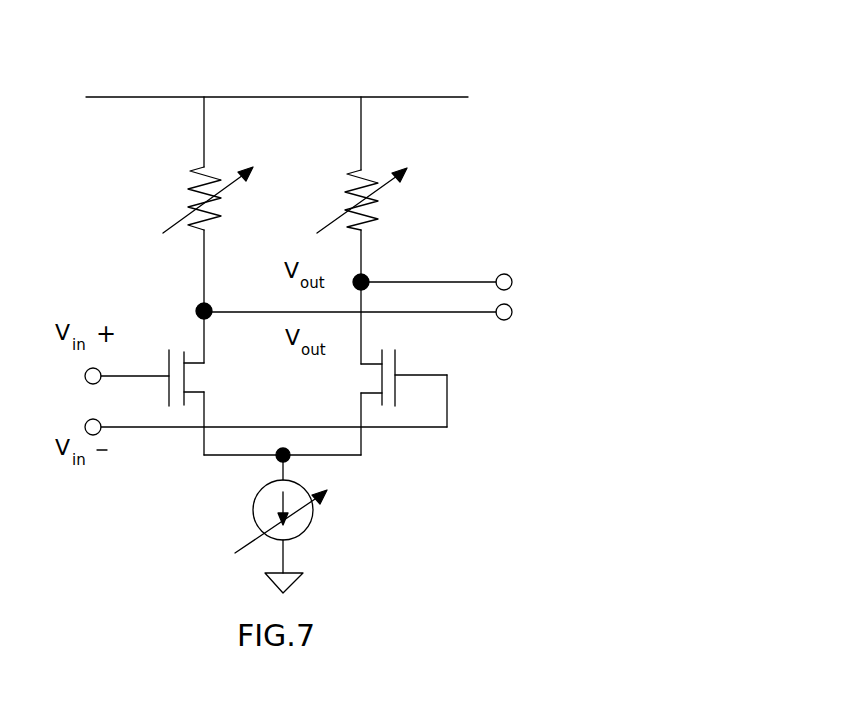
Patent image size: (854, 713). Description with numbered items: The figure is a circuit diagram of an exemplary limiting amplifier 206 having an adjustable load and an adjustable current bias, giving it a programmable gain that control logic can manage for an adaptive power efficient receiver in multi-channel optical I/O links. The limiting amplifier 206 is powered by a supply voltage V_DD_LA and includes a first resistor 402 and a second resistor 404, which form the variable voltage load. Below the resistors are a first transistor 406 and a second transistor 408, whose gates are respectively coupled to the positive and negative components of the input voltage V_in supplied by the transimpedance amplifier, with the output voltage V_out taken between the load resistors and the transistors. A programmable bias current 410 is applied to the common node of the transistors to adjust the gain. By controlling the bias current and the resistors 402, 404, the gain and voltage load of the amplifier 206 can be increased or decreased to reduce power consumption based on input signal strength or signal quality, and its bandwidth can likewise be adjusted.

The limiting amplifier 206 is at (323, 31).
The first resistor 402 is at (188, 183).
The second resistor 404 is at (365, 170).
The first transistor 406 is at (168, 352).
The second transistor 408 is at (397, 362).
The programmable bias current 410 is at (313, 518).